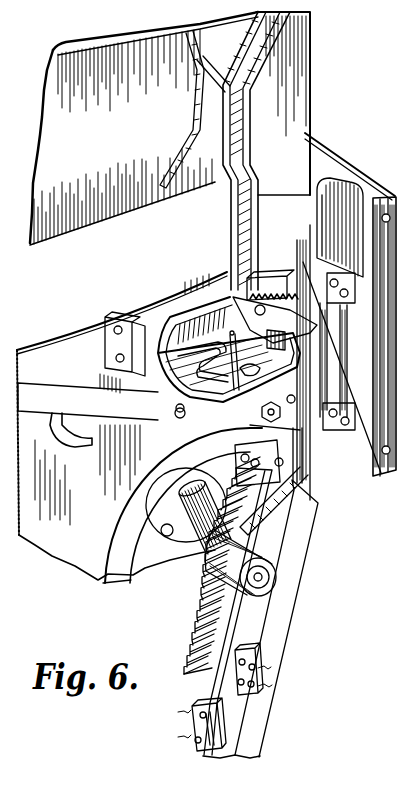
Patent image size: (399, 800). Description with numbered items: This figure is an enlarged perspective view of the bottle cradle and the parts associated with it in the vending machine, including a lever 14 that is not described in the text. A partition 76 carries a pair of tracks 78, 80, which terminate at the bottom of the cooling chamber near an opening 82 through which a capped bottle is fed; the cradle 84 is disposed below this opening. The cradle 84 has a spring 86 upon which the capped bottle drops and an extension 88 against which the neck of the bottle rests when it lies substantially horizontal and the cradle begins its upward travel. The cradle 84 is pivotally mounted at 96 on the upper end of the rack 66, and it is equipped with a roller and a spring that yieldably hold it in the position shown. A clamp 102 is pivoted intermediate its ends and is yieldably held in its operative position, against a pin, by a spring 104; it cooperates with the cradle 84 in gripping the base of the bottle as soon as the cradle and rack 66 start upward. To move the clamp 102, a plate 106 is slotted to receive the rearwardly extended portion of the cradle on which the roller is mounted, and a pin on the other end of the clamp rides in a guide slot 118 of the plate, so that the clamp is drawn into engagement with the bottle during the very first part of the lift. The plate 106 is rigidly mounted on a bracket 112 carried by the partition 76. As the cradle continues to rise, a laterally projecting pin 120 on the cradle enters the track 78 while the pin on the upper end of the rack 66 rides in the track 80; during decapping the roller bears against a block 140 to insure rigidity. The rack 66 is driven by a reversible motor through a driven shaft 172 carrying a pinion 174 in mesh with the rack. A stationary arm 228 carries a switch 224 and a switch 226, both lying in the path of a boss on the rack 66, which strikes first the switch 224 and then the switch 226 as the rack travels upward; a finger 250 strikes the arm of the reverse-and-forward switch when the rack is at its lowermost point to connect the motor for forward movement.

The lever 14 is at (275, 323).
The rack 66 is at (192, 611).
The partition 76 is at (170, 127).
The track 78 is at (186, 110).
The track 80 is at (272, 28).
The opening 82 is at (72, 226).
The cradle 84 is at (165, 332).
The spring 86 is at (229, 354).
The extension 88 is at (159, 415).
The pivot 96 is at (300, 412).
The clamp 102 is at (312, 330).
The spring 104 is at (278, 290).
The plate 106 is at (312, 446).
The bracket 112 is at (385, 468).
The guide slot 118 is at (262, 290).
The pin 120 is at (108, 342).
The block 140 is at (352, 178).
The driven shaft 172 is at (280, 583).
The pinion 174 is at (202, 552).
The switch 224 is at (190, 739).
The switch 226 is at (258, 655).
The arm 228 is at (258, 712).
The finger 250 is at (120, 578).